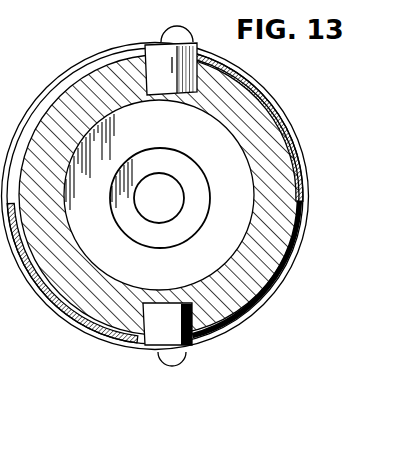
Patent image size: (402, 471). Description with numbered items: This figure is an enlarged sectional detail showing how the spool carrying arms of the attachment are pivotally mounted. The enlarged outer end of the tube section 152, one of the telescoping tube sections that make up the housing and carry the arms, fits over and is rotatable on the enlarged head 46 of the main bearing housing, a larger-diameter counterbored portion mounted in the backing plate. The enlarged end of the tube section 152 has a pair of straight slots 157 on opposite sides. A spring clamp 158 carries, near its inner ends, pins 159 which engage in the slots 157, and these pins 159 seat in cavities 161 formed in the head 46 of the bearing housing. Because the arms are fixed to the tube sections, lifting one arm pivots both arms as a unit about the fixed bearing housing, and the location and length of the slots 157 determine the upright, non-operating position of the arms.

The enlarged head of main bearing housing 46 is at (277, 167).
The tube section 152 is at (288, 117).
The straight slot 157 is at (68, 80).
The spring clamp 158 is at (122, 352).
The pin 159 is at (199, 206).
The cavity 161 is at (199, 80).